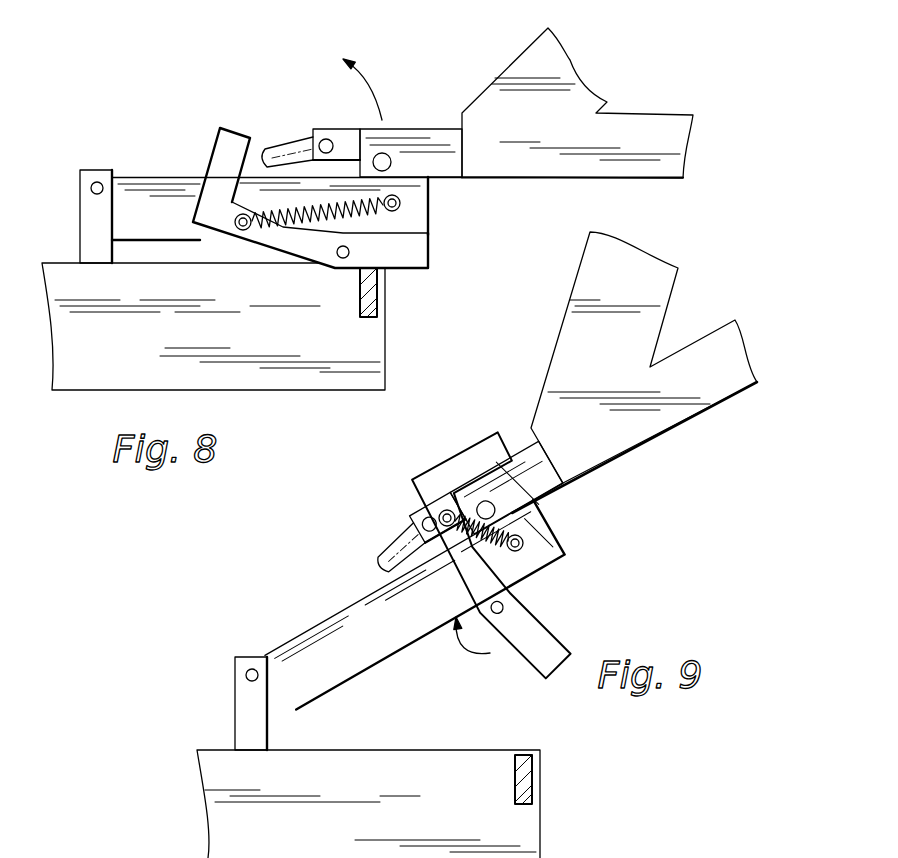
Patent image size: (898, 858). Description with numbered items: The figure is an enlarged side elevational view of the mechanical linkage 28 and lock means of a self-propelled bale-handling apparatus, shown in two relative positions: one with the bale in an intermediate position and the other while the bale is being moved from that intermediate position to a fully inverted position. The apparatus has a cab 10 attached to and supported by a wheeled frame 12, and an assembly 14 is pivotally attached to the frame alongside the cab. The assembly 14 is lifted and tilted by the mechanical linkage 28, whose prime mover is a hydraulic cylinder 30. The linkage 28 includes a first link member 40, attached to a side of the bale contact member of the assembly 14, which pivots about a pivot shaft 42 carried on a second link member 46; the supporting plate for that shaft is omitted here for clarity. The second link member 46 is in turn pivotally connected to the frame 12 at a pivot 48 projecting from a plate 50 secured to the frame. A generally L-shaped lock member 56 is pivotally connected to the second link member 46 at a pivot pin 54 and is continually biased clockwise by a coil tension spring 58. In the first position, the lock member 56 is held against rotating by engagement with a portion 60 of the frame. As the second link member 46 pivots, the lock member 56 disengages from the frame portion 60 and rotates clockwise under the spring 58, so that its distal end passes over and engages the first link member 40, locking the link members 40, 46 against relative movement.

In FIG. 9, the cab 10 is at (691, 854).
In FIG. 8, the wheeled frame 12 is at (112, 379).
In FIG. 9, the wheeled frame 12 is at (212, 808).
In FIG. 8, the assembly 14 is at (618, 179).
In FIG. 9, the assembly 14 is at (700, 407).
In FIG. 8, the mechanical linkage 28 is at (413, 129).
In FIG. 9, the mechanical linkage 28 is at (384, 660).
In FIG. 8, the hydraulic cylinder 30 is at (272, 148).
In FIG. 9, the hydraulic cylinder 30 is at (407, 534).
In FIG. 8, the first link member 40 is at (447, 168).
In FIG. 9, the first link member 40 is at (553, 493).
In FIG. 8, the pivot shaft 42 is at (373, 152).
In FIG. 9, the pivot shaft 42 is at (490, 500).
In FIG. 8, the second link member 46 is at (163, 187).
In FIG. 9, the second link member 46 is at (335, 627).
In FIG. 8, the pivot 48 is at (96, 182).
In FIG. 9, the pivot 48 is at (245, 677).
In FIG. 8, the plate 50 is at (88, 224).
In FIG. 9, the plate 50 is at (247, 710).
In FIG. 8, the pivot pin 54 is at (340, 259).
In FIG. 9, the pivot pin 54 is at (505, 607).
In FIG. 8, the lock member 56 is at (212, 150).
In FIG. 9, the lock member 56 is at (468, 462).
In FIG. 8, the coil tension spring 58 is at (284, 228).
In FIG. 9, the coil tension spring 58 is at (507, 552).
In FIG. 8, the frame portion 60 is at (378, 288).
In FIG. 9, the frame portion 60 is at (533, 781).